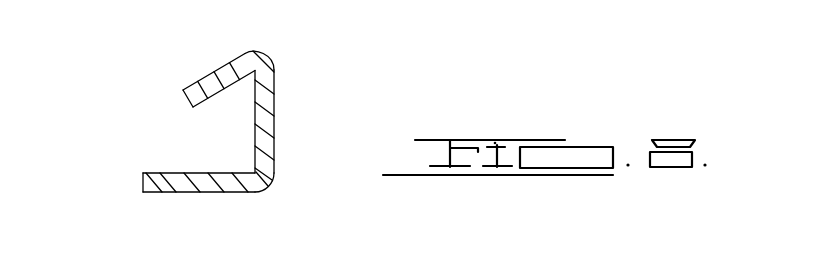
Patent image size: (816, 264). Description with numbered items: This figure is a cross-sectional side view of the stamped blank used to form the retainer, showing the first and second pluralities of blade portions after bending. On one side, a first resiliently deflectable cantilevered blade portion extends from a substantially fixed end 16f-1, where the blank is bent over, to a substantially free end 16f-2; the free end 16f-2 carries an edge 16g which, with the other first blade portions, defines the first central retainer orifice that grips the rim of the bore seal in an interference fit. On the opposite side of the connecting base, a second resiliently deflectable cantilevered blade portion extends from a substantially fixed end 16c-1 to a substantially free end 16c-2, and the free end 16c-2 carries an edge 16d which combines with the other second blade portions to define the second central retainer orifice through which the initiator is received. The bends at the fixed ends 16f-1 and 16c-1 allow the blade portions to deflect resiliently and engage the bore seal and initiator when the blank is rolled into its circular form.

The substantially free end 16f-2 is at (200, 84).
The substantially fixed end 16f-1 is at (240, 53).
The edges 16g is at (186, 94).
The edges 16d is at (143, 182).
The substantially free end 16c-2 is at (162, 183).
The substantially fixed end 16c-1 is at (238, 185).